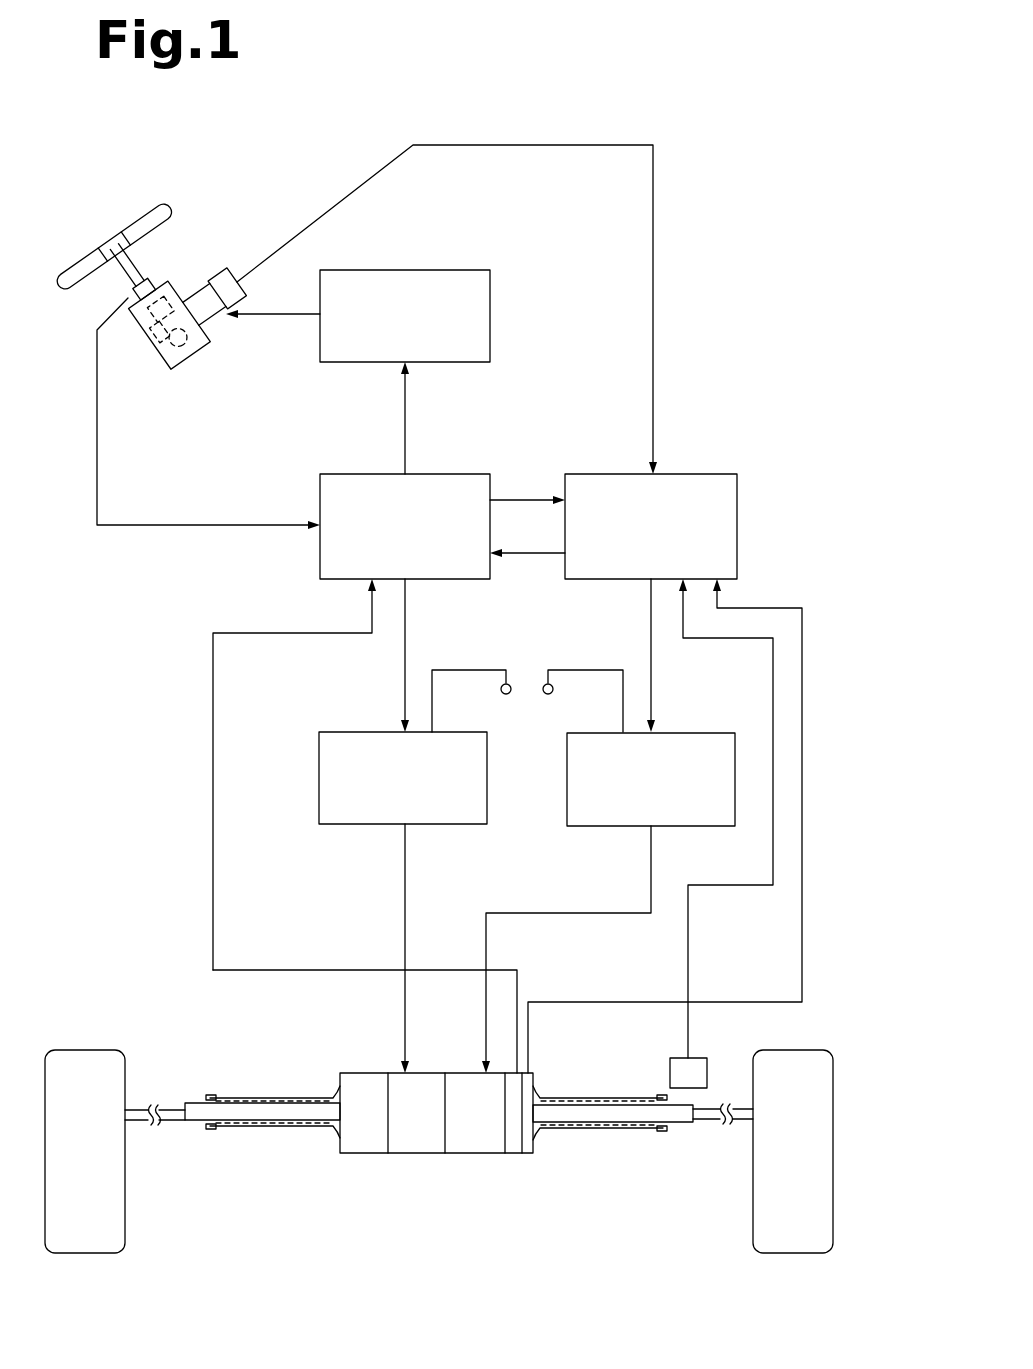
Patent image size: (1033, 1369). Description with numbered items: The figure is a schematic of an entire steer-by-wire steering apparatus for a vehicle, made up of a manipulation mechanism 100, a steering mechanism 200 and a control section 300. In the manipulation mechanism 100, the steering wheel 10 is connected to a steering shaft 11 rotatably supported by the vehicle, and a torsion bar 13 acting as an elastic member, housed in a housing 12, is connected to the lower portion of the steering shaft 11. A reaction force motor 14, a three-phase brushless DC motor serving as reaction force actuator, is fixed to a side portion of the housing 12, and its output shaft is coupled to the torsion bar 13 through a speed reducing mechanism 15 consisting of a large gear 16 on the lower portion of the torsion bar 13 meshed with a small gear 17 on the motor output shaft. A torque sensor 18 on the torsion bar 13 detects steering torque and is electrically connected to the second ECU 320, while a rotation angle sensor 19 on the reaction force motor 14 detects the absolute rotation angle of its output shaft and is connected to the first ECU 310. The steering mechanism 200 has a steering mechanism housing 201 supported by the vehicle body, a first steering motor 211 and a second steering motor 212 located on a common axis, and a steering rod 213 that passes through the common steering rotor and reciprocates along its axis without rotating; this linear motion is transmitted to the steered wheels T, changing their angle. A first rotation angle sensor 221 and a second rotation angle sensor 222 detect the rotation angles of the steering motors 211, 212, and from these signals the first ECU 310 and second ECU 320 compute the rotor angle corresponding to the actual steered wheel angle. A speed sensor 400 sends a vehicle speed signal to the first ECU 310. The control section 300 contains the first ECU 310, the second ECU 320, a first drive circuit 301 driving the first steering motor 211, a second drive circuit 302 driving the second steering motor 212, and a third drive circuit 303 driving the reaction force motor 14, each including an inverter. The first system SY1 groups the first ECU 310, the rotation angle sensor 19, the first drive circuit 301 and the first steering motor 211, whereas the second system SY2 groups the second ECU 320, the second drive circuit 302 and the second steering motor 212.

The steering wheel 10 is at (114, 246).
The steering shaft 11 is at (127, 265).
The housing 12 is at (170, 325).
The torsion bar 13 is at (160, 309).
The reaction force motor 14 is at (204, 304).
The speed reducing mechanism 15 is at (153, 409).
The large gear 16 is at (160, 332).
The small gear 17 is at (177, 337).
The torque sensor 18 is at (144, 289).
The rotation angle sensor 19 is at (227, 288).
The manipulation mechanism 100 is at (205, 222).
The steering mechanism 200 is at (592, 1196).
The steering mechanism housing 201 is at (550, 1091).
The first steering motor 211 is at (465, 1153).
The second steering motor 212 is at (405, 1153).
The steering rod 213 is at (299, 1112).
The first rotation angle sensor 221 is at (527, 1155).
The second rotation angle sensor 222 is at (513, 1155).
The control section 300 is at (829, 253).
The first drive circuit 301 is at (718, 733).
The second drive circuit 302 is at (319, 778).
The third drive circuit 303 is at (472, 270).
The first electronic control unit 310 is at (703, 474).
The second electronic control unit 320 is at (353, 474).
The speed sensor 400 is at (700, 1058).
The steered wheels T is at (128, 1212).
The first system SY1 is at (643, 598).
The second system SY2 is at (371, 598).